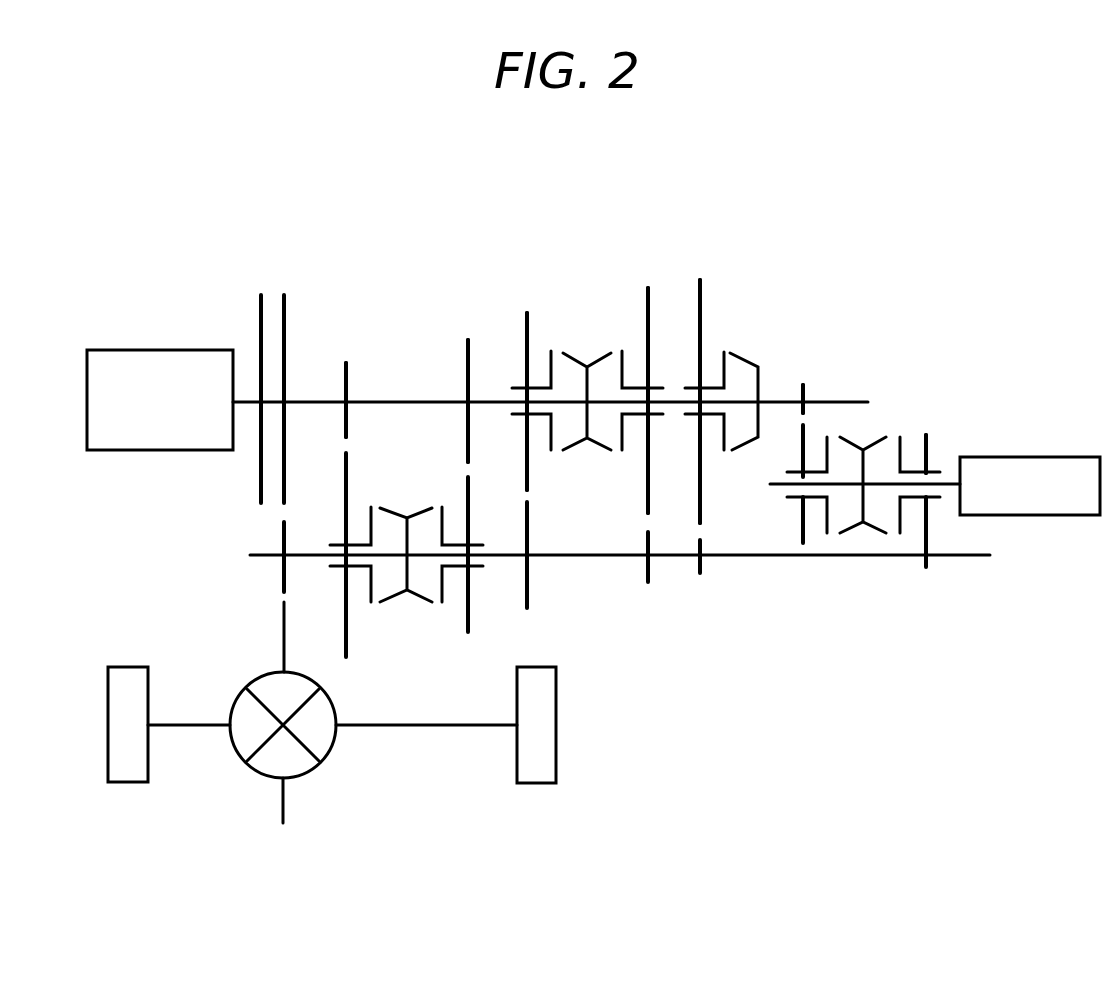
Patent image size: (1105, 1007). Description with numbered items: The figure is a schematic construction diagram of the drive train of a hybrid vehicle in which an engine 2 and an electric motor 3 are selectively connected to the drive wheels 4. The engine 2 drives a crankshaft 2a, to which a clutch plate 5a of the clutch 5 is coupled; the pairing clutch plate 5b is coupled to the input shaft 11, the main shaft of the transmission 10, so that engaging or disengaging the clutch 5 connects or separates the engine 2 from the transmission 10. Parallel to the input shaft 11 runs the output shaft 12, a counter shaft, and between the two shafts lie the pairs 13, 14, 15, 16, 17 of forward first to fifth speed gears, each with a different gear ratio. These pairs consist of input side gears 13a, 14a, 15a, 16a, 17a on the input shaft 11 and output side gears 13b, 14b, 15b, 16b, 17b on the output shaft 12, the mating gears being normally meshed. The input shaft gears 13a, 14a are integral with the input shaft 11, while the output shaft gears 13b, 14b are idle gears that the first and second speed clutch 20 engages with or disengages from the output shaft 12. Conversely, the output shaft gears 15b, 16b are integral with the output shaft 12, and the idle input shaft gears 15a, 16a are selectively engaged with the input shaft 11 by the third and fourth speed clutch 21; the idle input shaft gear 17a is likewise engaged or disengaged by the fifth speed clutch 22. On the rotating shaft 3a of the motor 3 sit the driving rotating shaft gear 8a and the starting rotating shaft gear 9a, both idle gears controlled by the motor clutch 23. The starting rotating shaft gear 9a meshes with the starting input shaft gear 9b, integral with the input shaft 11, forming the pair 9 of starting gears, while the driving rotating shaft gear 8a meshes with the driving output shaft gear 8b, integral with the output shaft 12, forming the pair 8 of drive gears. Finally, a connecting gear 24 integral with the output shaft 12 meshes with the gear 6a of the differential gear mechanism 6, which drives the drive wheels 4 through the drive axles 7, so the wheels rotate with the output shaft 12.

The engine 2 is at (143, 350).
The crankshaft 2a is at (246, 406).
The electric motor 3 is at (1025, 457).
The rotating shaft 3a is at (945, 483).
The drive wheels 4 is at (125, 784).
The clutch 5 is at (222, 227).
The clutch plate 5a is at (261, 295).
The clutch plate 5b is at (284, 295).
The differential gear mechanism 6 is at (303, 770).
The gear 6a is at (282, 630).
The drive axles 7 is at (195, 728).
The pair of drive gears 8 is at (926, 435).
The driving rotating shaft gear 8a is at (977, 394).
The driving output shaft gear 8b is at (922, 569).
The pair of starting gears 9 is at (803, 385).
The starting rotating shaft gear 9a is at (803, 545).
The starting input shaft gear 9b is at (849, 359).
The transmission 10 is at (728, 695).
The input shaft 11 is at (864, 400).
The output shaft 12 is at (965, 558).
The forward first speed gear pair 13 is at (346, 364).
The input shaft forward first speed gear 13a is at (392, 364).
The output shaft forward first speed gear 13b is at (347, 490).
The forward second speed gear pair 14 is at (468, 340).
The input shaft forward second speed gear 14a is at (499, 336).
The output shaft forward second speed gear 14b is at (468, 633).
The forward third speed gear pair 15 is at (527, 313).
The input shaft forward third speed gear 15a is at (583, 373).
The output shaft forward third speed gear 15b is at (528, 588).
The forward fourth speed gear pair 16 is at (648, 288).
The input shaft forward fourth speed gear 16a is at (695, 343).
The output shaft forward fourth speed gear 16b is at (648, 583).
The forward fifth speed gear pair 17 is at (700, 280).
The input shaft forward fifth speed gear 17a is at (771, 372).
The output shaft forward fifth speed gear 17b is at (700, 574).
The first and second speed clutch 20 is at (400, 600).
The third and fourth speed clutch 21 is at (598, 450).
The fifth speed clutch 22 is at (748, 448).
The motor clutch 23 is at (866, 534).
The connecting gear 24 is at (282, 573).